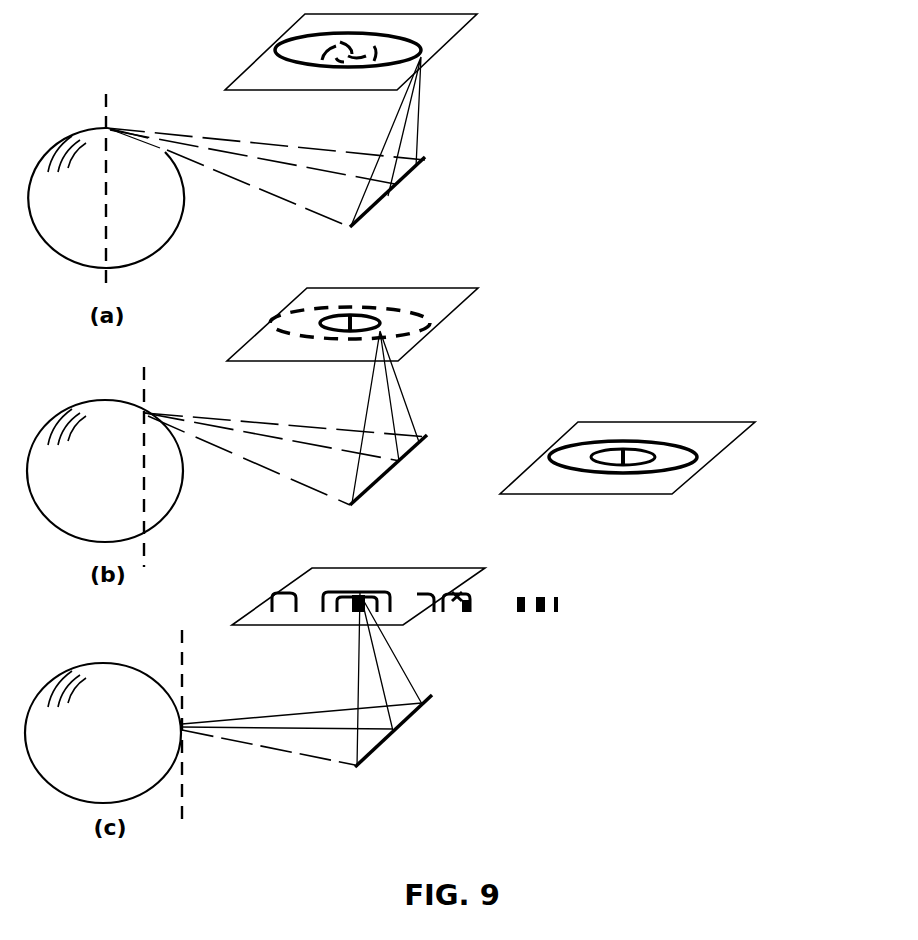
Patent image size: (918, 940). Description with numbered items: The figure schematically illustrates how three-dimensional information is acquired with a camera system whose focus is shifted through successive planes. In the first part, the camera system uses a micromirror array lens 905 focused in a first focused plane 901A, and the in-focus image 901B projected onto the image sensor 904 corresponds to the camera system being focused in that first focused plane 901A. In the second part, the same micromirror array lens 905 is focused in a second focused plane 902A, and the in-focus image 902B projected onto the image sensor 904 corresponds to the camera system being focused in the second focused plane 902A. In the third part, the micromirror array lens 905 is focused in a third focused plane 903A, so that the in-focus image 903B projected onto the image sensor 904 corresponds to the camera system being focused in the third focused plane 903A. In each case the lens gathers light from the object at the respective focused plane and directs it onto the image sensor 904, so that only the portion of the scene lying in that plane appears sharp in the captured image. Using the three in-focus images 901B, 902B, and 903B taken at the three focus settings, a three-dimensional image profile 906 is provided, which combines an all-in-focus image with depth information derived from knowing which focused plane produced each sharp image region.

The first focused plane 901A is at (226, 176).
The in-focus image 901B is at (300, 35).
The second focused plane 902A is at (227, 454).
The in-focus image 902B is at (300, 310).
The third focused plane 903A is at (223, 712).
The in-focus image 903B is at (630, 453).
The image sensor 904 is at (433, 43).
The micromirror array lens 905 is at (380, 200).
The three-dimensional image profile 906 is at (577, 483).